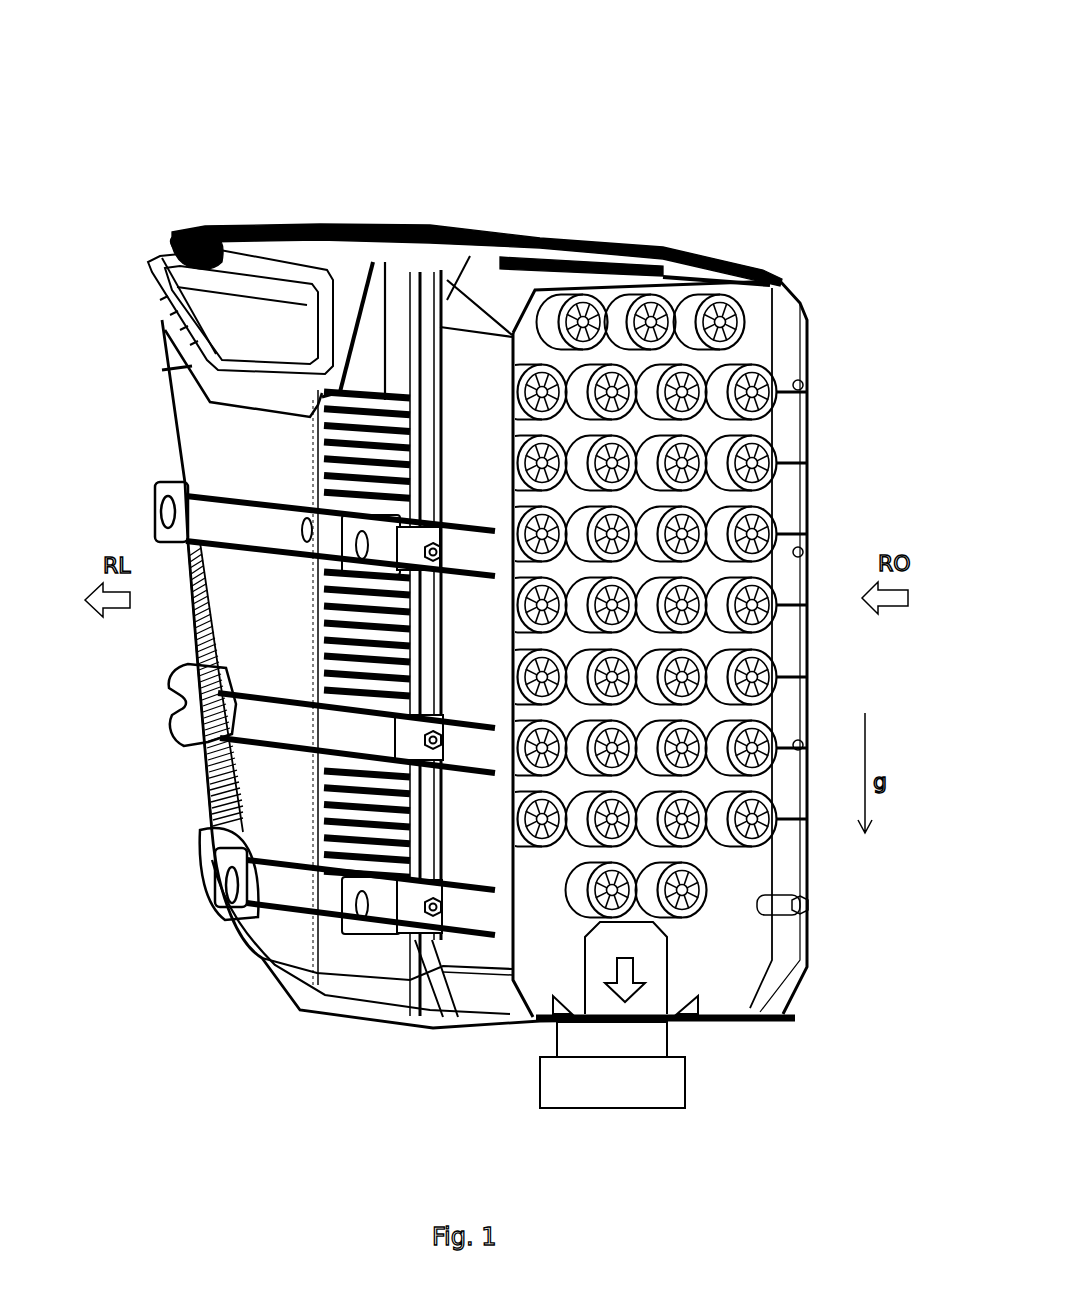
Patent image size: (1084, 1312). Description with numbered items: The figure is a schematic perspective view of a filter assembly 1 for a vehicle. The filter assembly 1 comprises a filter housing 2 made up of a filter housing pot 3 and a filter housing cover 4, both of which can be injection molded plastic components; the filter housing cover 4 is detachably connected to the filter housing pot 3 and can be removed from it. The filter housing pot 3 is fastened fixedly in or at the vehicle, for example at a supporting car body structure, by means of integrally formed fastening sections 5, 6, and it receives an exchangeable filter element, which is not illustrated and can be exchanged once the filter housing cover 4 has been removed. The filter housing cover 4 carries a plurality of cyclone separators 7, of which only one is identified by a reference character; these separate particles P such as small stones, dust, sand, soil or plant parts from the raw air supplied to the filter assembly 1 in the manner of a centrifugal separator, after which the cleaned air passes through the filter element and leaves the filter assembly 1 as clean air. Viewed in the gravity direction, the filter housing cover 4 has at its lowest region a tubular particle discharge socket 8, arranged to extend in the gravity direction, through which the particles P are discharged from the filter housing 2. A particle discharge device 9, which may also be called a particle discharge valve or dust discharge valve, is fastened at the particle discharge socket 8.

The filter assembly 1 is at (416, 74).
The filter housing 2 is at (680, 156).
The filter housing pot 3 is at (542, 242).
The filter housing cover 4 is at (697, 275).
The fastening section 5 is at (155, 512).
The fastening section 6 is at (200, 877).
The cyclone separator 7 is at (762, 312).
The particle discharge socket 8 is at (667, 1052).
The particle discharge device 9 is at (685, 1088).
The particles P is at (633, 972).